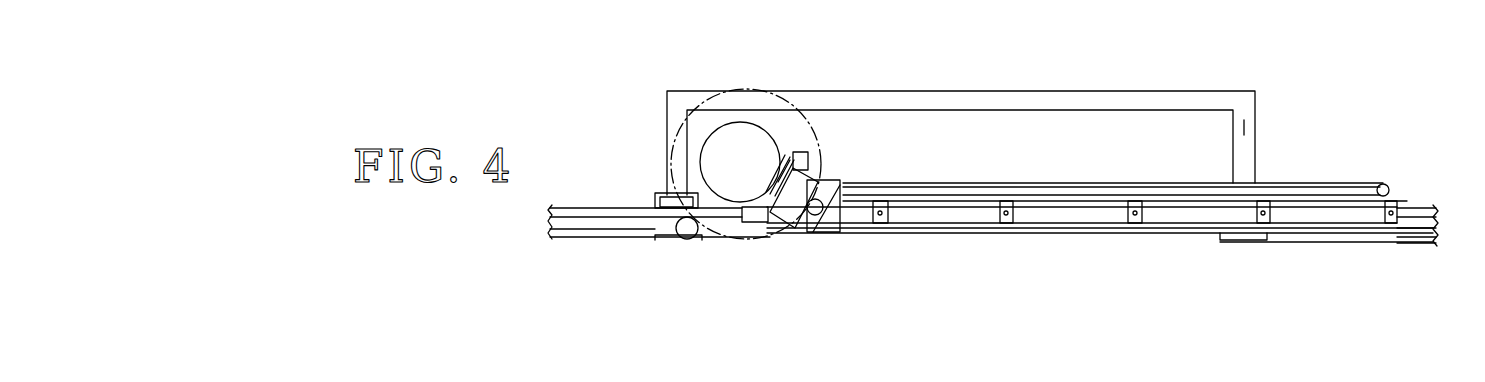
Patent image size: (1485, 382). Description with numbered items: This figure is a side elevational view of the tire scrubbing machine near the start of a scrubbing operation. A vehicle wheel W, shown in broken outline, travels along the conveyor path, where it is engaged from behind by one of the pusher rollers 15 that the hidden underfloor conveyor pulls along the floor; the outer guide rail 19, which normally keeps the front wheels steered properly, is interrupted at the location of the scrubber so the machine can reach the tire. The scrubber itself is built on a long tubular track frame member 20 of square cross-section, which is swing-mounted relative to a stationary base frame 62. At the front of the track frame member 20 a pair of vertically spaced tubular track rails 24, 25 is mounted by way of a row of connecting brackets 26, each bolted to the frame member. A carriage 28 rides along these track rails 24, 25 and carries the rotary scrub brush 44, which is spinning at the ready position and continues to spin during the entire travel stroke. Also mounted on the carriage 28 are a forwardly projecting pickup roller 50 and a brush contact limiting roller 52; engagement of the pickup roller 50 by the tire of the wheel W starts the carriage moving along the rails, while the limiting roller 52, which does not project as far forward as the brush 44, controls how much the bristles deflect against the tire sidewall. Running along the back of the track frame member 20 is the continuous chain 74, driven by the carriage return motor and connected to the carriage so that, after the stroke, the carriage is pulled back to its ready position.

The pusher roller 15 is at (687, 240).
The outer guide rail 19 is at (586, 210).
The track frame member 20 is at (1052, 215).
The track rail 24 is at (942, 190).
The track rail 25 is at (933, 227).
The connecting bracket 26 is at (1137, 223).
The carriage 28 is at (825, 198).
The rotary scrub brush 44 is at (781, 226).
The pickup roller 50 is at (818, 228).
The brush contact limiting roller 52 is at (802, 152).
The base frame 62 is at (1014, 114).
The continuous chain 74 is at (1052, 183).
The vehicle wheel W is at (672, 143).